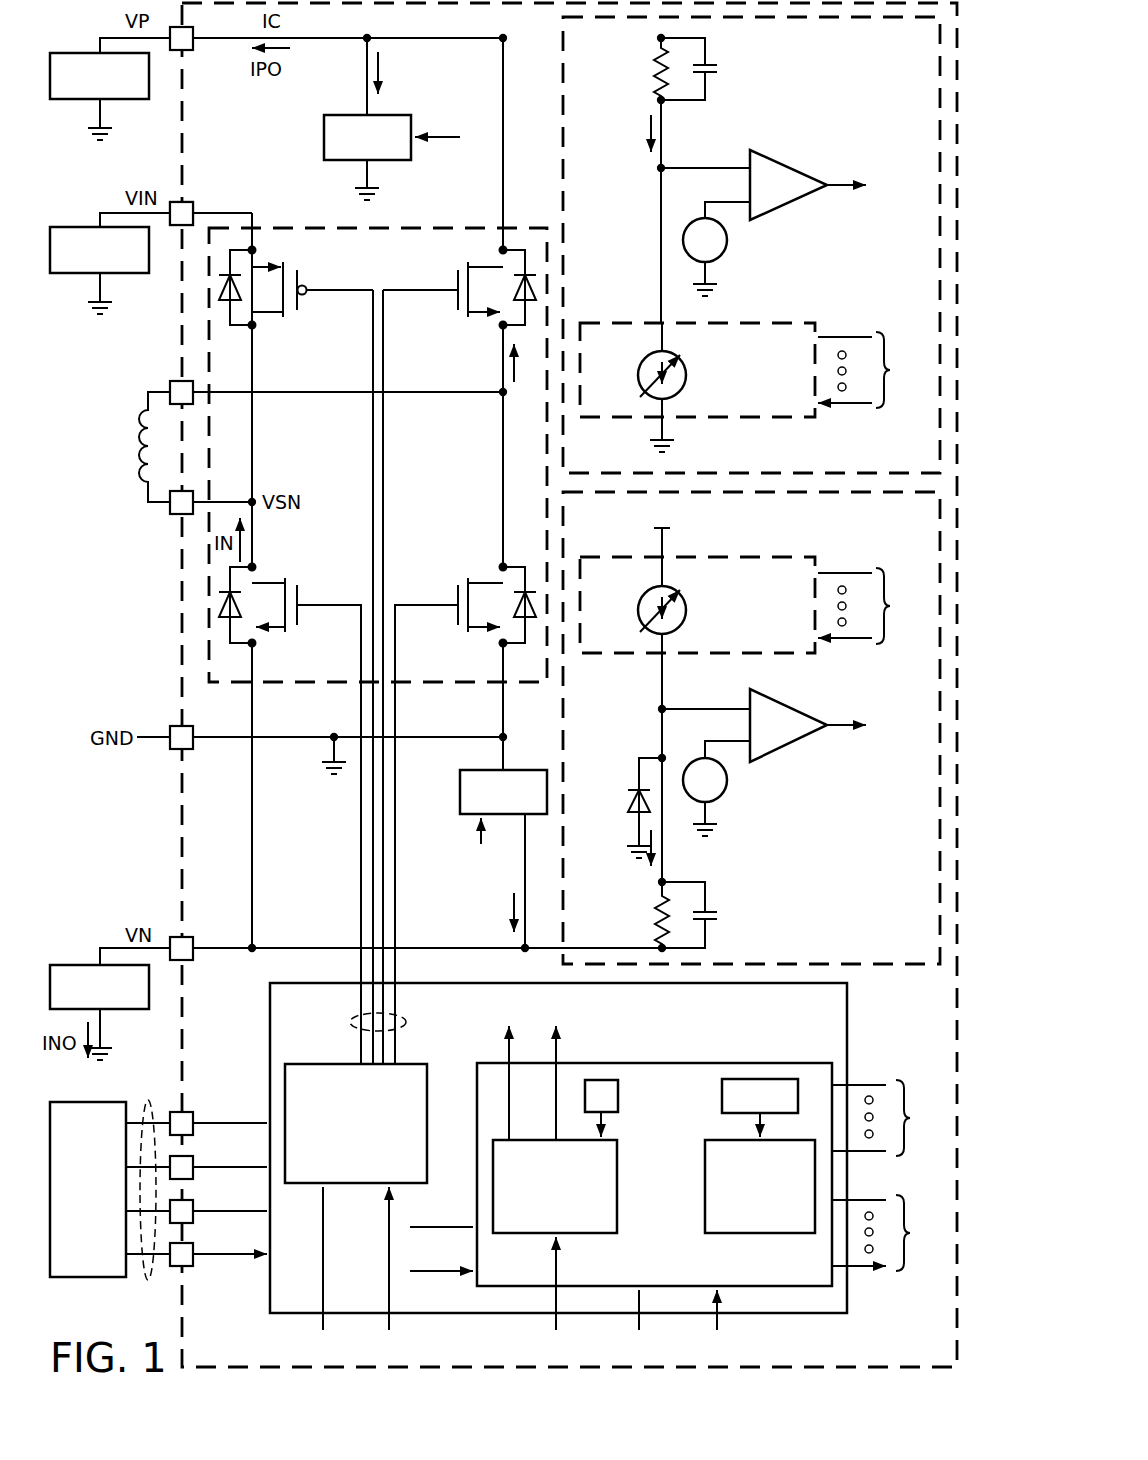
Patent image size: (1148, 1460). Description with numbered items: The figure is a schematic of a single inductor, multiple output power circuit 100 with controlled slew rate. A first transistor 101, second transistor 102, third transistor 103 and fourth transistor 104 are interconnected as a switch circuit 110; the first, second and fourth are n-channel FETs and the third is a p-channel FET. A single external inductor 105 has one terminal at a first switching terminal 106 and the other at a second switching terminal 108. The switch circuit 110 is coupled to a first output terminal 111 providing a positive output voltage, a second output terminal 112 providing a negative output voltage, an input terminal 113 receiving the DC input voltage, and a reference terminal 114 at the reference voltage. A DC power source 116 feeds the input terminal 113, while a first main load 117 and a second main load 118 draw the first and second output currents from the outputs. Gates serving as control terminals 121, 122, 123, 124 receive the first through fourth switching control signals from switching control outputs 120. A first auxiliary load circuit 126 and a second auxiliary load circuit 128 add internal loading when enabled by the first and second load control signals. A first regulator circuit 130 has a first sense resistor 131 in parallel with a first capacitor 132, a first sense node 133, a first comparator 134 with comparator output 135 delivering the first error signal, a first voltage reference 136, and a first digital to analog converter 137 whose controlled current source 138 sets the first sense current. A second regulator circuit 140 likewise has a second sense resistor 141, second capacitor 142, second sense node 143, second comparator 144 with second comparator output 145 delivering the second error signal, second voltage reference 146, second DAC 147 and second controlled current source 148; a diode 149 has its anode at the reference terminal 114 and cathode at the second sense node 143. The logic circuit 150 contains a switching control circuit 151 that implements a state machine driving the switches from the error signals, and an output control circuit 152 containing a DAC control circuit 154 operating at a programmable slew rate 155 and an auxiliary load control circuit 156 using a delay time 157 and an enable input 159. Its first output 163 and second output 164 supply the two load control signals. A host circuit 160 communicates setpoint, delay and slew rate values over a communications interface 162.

The power circuit 100 is at (182, 818).
The first transistor 101 is at (458, 285).
The second transistor 102 is at (297, 596).
The third transistor 103 is at (300, 285).
The fourth transistor 104 is at (458, 596).
The inductor 105 is at (130, 438).
The first switching terminal 106 is at (503, 358).
The second switching terminal 108 is at (255, 355).
The switch circuit 110 is at (312, 226).
The first output terminal 111 is at (503, 108).
The second output terminal 112 is at (255, 700).
The input terminal 113 is at (220, 213).
The reference terminal 114 is at (100, 124).
The DC power source 116 is at (78, 227).
The first main load 117 is at (78, 53).
The second main load 118 is at (78, 965).
The switching control outputs 120 is at (350, 1024).
The control terminal 121 is at (383, 462).
The control terminal 122 is at (361, 650).
The control terminal 123 is at (373, 440).
The control terminal 124 is at (395, 650).
The first auxiliary load circuit 126 is at (345, 115).
The second auxiliary load circuit 128 is at (520, 770).
The first regulator circuit 130 is at (896, 64).
The first sense resistor 131 is at (658, 72).
The first capacitor 132 is at (718, 72).
The first sense node 133 is at (661, 228).
The first comparator 134 is at (790, 161).
The comparator output 135 is at (840, 187).
The first voltage reference 136 is at (727, 240).
The first digital to analog converter 137 is at (630, 323).
The controlled current source 138 is at (645, 368).
The second regulator circuit 140 is at (896, 912).
The second sense resistor 141 is at (658, 918).
The second capacitor 142 is at (718, 920).
The second sense node 143 is at (661, 750).
The second comparator 144 is at (797, 706).
The second comparator output 145 is at (840, 727).
The second voltage reference 146 is at (727, 782).
The second DAC 147 is at (600, 655).
The second controlled current source 148 is at (645, 603).
The diode 149 is at (639, 794).
The logic circuit 150 is at (850, 1020).
The switching control circuit 151 is at (366, 1183).
The output control circuit 152 is at (790, 1060).
The DAC control circuit 154 is at (705, 1178).
The slew rate 155 is at (722, 1094).
The auxiliary load control circuit 156 is at (619, 1200).
The delay time 157 is at (619, 1108).
The enable input 159 is at (556, 1255).
The host circuit 160 is at (110, 1222).
The communications interface 162 is at (148, 1280).
The first output 163 is at (506, 1045).
The second output 164 is at (559, 1045).